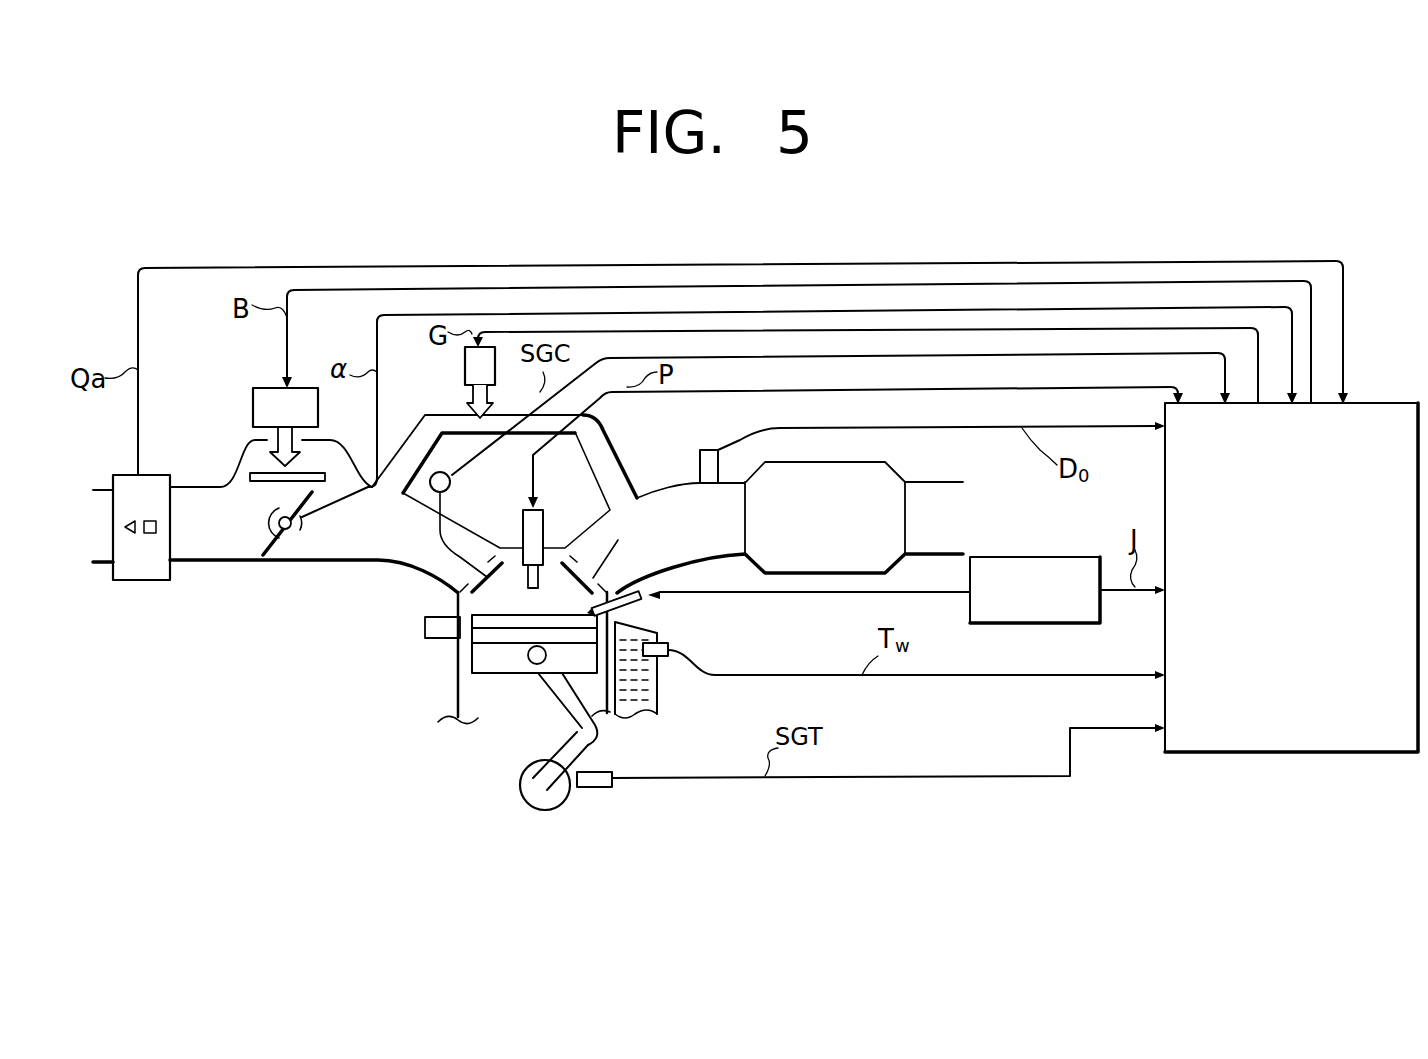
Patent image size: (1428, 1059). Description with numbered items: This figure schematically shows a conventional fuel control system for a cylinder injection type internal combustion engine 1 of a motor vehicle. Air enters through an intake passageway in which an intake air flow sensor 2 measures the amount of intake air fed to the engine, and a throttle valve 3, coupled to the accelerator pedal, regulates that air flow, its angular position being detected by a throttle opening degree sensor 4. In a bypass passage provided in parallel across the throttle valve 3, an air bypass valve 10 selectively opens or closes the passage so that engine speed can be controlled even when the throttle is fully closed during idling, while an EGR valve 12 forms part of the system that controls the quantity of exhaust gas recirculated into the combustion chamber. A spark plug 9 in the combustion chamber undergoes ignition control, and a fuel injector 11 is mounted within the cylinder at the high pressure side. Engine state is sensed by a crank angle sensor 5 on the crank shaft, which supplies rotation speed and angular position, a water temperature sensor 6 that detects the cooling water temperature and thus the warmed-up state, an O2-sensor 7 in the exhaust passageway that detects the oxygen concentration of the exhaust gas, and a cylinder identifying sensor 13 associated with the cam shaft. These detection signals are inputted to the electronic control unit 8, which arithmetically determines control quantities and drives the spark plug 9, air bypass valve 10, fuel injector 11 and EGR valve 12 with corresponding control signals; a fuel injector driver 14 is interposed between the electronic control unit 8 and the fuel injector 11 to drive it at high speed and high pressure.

The internal combustion engine 1 is at (658, 697).
The intake air flow sensor 2 is at (147, 580).
The throttle valve 3 is at (275, 527).
The throttle opening degree sensor 4 is at (298, 535).
The crank angle sensor 5 is at (612, 792).
The water temperature sensor 6 is at (670, 645).
The O2-sensor 7 is at (697, 462).
The electronic control unit 8 is at (1403, 753).
The spark plug 9 is at (545, 510).
The air bypass valve 10 is at (253, 395).
The fuel injector 11 is at (643, 582).
The EGR valve 12 is at (465, 365).
The cylinder identifying sensor 13 is at (452, 478).
The fuel injector driver 14 is at (1037, 557).